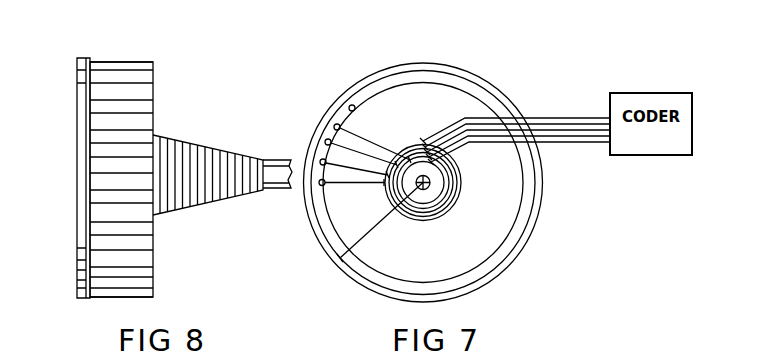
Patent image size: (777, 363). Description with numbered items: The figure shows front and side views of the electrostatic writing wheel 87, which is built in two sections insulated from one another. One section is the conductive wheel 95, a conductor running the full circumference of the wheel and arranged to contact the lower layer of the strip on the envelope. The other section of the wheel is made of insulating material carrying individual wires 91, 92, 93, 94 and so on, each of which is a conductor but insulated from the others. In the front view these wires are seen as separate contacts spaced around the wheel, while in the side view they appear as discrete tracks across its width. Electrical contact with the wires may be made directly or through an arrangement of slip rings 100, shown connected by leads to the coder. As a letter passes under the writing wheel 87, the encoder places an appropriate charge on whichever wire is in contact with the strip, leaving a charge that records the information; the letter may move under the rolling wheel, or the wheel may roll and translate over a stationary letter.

In FIG. 8, the writing wheel 87 is at (144, 62).
In FIG. 8, the wire 91 is at (96, 188).
In FIG. 7, the wire 91 is at (320, 186).
In FIG. 8, the wire 92 is at (96, 157).
In FIG. 7, the wire 92 is at (320, 160).
In FIG. 8, the wire 93 is at (96, 143).
In FIG. 7, the wire 93 is at (326, 139).
In FIG. 8, the wire 94 is at (96, 113).
In FIG. 7, the wire 94 is at (335, 124).
In FIG. 8, the conductive wheel 95 is at (86, 58).
In FIG. 7, the conductive wheel 95 is at (383, 72).
In FIG. 8, the slip rings 100 is at (200, 146).
In FIG. 7, the slip rings 100 is at (442, 205).